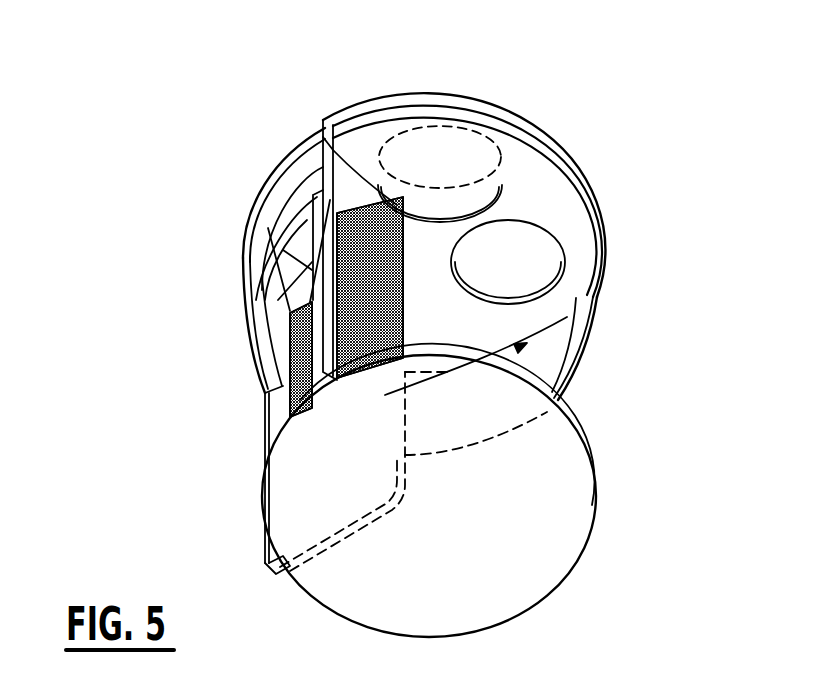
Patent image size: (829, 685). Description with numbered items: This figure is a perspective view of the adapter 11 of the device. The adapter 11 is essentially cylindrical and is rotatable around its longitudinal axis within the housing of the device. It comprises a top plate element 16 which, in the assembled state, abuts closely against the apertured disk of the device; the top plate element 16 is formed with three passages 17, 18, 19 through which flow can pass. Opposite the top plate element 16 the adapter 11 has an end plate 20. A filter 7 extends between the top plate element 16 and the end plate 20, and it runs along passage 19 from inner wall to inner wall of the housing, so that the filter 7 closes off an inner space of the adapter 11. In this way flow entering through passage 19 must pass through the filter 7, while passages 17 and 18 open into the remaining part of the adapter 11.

The filter 7 is at (367, 320).
The adapter 11 is at (162, 303).
The top plate element 16 is at (560, 147).
The passage 17 is at (528, 270).
The passage 18 is at (443, 207).
The passage 19 is at (308, 255).
The end plate 20 is at (530, 543).